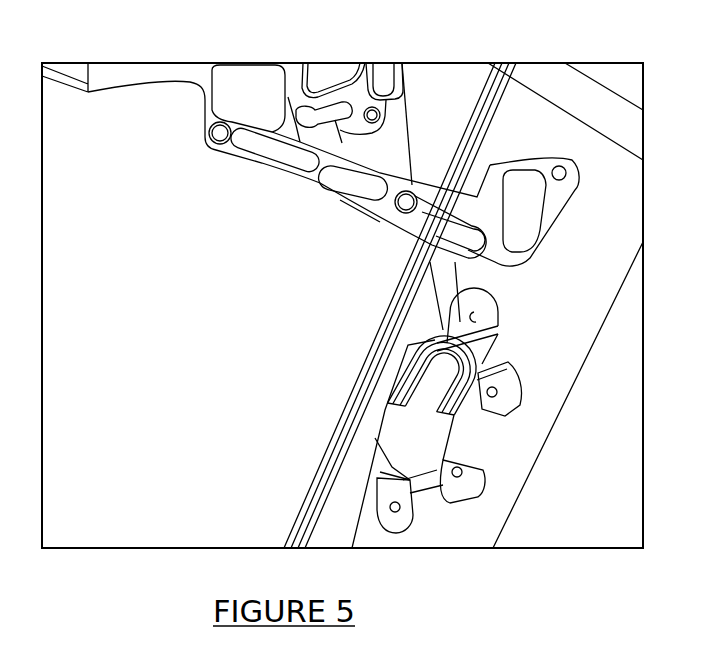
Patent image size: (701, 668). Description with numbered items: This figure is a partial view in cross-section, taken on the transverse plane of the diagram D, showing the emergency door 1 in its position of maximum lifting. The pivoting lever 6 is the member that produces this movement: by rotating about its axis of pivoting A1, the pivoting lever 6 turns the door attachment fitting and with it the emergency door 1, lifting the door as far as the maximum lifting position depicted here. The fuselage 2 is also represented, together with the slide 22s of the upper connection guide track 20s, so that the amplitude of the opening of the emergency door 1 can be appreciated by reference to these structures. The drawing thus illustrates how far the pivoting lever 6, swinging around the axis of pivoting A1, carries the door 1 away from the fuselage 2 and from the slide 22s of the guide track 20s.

The emergency door 1 is at (203, 182).
The fuselage 2 is at (370, 338).
The pivoting lever 6 is at (400, 223).
The axis of pivoting A1 is at (553, 172).
The upper connection guide track 20s is at (510, 402).
The slide 22s is at (437, 403).